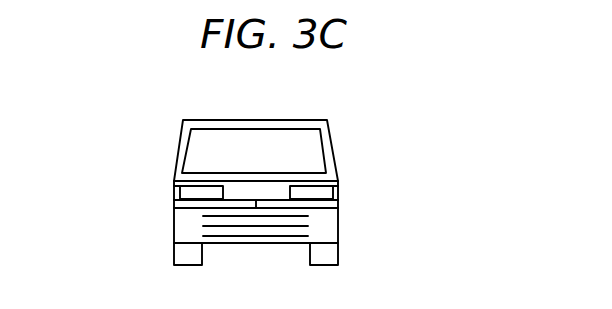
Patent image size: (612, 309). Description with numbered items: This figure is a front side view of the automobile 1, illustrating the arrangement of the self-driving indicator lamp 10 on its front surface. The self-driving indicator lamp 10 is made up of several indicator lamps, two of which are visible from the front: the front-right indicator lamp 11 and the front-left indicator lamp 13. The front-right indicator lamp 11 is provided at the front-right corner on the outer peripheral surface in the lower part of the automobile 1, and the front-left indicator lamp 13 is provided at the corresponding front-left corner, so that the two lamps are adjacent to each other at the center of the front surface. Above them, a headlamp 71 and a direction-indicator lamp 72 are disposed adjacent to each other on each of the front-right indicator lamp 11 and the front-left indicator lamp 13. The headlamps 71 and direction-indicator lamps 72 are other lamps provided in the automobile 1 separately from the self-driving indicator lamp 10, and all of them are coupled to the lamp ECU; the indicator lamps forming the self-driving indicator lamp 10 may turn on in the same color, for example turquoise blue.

The automobile 1 is at (379, 133).
The self-driving indicator lamp 10 is at (256, 204).
The front-right indicator lamp 11 is at (173, 205).
The front-left indicator lamp 13 is at (339, 203).
The headlamp 71 is at (208, 190).
The direction-indicator lamp 72 is at (173, 188).